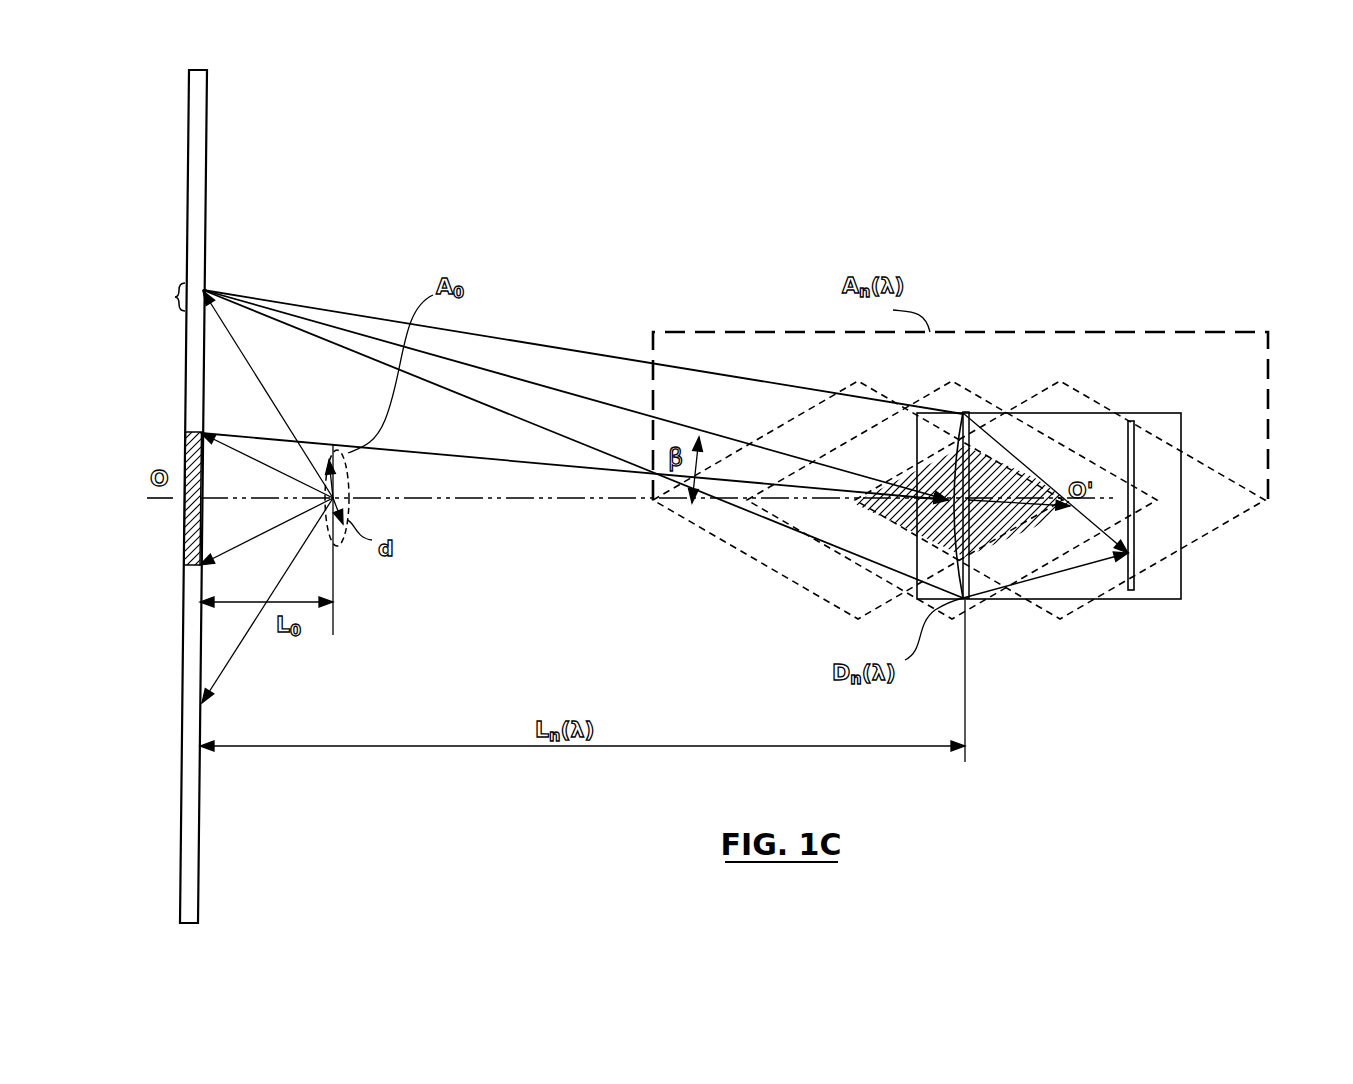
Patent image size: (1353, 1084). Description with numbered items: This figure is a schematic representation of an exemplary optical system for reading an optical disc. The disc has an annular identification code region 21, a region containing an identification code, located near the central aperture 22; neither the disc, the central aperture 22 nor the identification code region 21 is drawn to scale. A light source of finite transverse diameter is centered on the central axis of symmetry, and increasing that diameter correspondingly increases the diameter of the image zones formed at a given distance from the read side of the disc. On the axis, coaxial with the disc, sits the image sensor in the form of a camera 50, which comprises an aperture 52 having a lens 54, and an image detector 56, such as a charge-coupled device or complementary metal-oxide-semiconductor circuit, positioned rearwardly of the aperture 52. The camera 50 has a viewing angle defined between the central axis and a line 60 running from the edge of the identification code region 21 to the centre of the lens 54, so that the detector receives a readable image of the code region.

The annular identification code region 21 is at (166, 297).
The central aperture 22 is at (185, 540).
The camera 50 is at (1137, 385).
The aperture 52 is at (955, 413).
The lens 54 is at (990, 413).
The image detector 56 is at (1135, 440).
The line 60 is at (565, 395).